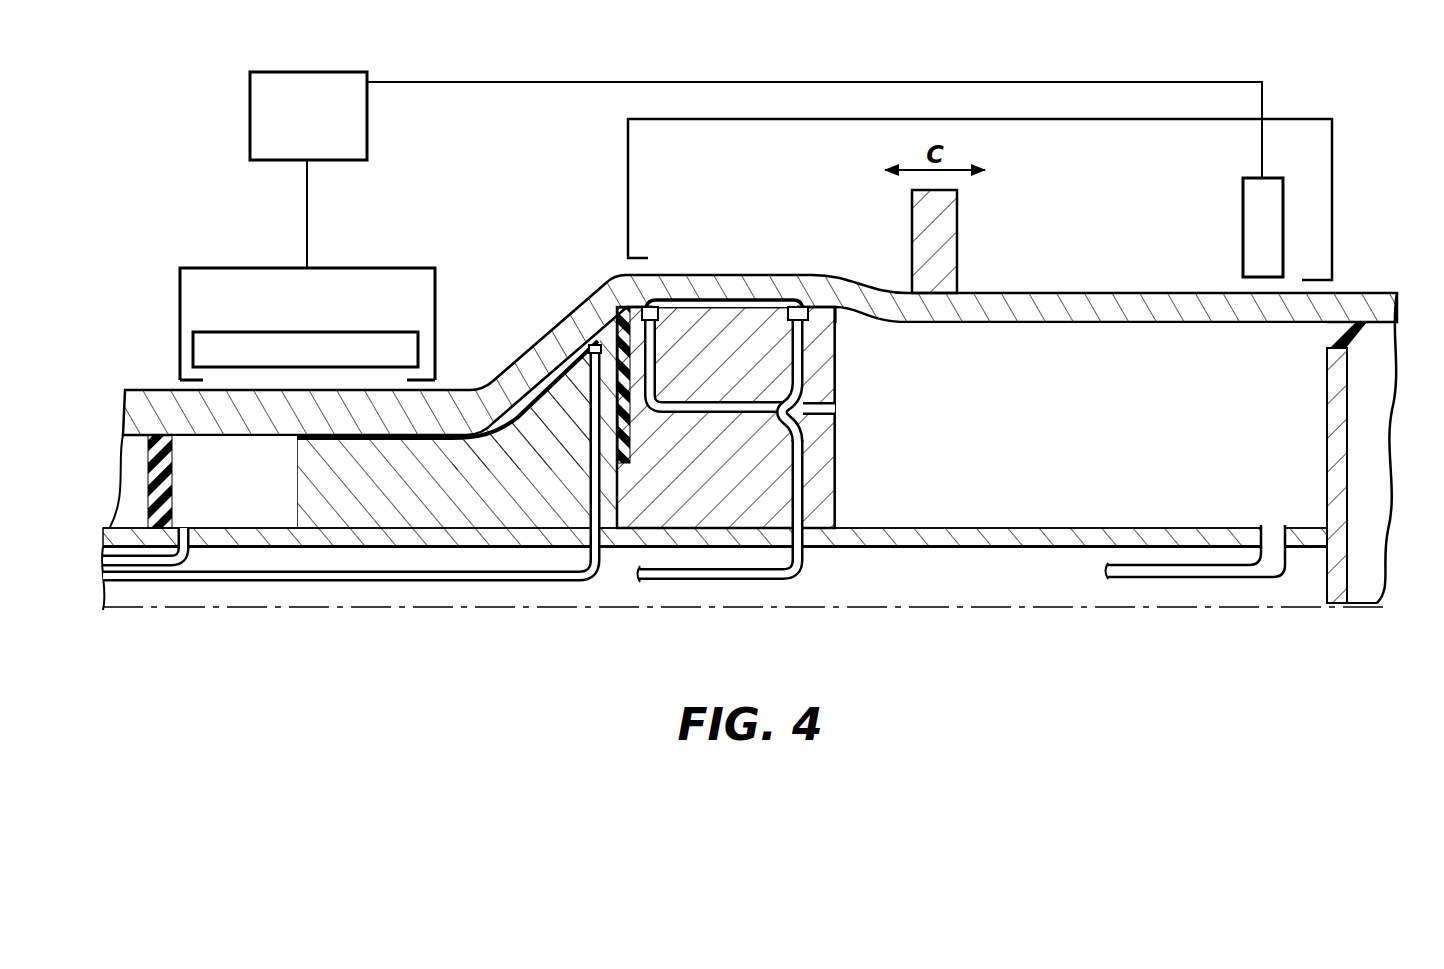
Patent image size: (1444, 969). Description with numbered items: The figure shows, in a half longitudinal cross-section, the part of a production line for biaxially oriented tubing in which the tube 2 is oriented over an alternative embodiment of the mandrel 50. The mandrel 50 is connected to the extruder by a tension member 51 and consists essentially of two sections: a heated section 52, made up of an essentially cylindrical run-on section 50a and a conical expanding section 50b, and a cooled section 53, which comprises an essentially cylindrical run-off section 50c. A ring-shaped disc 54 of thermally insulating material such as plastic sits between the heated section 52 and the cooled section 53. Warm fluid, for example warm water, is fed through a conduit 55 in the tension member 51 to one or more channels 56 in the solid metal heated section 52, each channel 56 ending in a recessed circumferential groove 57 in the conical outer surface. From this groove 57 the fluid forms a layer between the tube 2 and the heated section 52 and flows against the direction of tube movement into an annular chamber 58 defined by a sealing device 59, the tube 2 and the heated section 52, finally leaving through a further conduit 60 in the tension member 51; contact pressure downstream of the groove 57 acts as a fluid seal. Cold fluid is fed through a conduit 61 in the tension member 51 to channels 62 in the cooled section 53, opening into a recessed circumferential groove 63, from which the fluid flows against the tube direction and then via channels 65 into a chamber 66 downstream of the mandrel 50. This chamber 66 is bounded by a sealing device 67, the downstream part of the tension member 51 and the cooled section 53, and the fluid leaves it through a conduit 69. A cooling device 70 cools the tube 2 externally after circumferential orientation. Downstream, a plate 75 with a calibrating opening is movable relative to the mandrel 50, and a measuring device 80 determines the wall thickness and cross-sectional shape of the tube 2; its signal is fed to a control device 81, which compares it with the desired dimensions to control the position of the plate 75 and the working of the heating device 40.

The tube 2 is at (476, 398).
The heating device 40 is at (383, 268).
The mandrel 50 is at (586, 624).
The run-on section 50a is at (378, 498).
The conical expanding section 50b is at (533, 431).
The run-off section 50c is at (683, 475).
The tension member 51 is at (973, 548).
The heated section 52 is at (433, 520).
The cooled section 53 is at (755, 512).
The ring-shaped disc 54 is at (618, 333).
The conduit 55 is at (272, 580).
The channel 56 is at (590, 475).
The circumferential groove 57 is at (593, 340).
The annular chamber 58 is at (213, 503).
The sealing device 59 is at (150, 468).
The further conduit 60 is at (150, 585).
The conduit 61 is at (650, 307).
The channel 62 is at (823, 482).
The circumferential groove 63 is at (798, 305).
The channel 65 is at (823, 402).
The chamber 66 is at (1085, 475).
The sealing device 67 is at (1340, 472).
The conduit 69 is at (1197, 579).
The cooling device 70 is at (1336, 240).
The plate 75 is at (947, 250).
The measuring device 80 is at (1243, 212).
The control device 81 is at (250, 127).